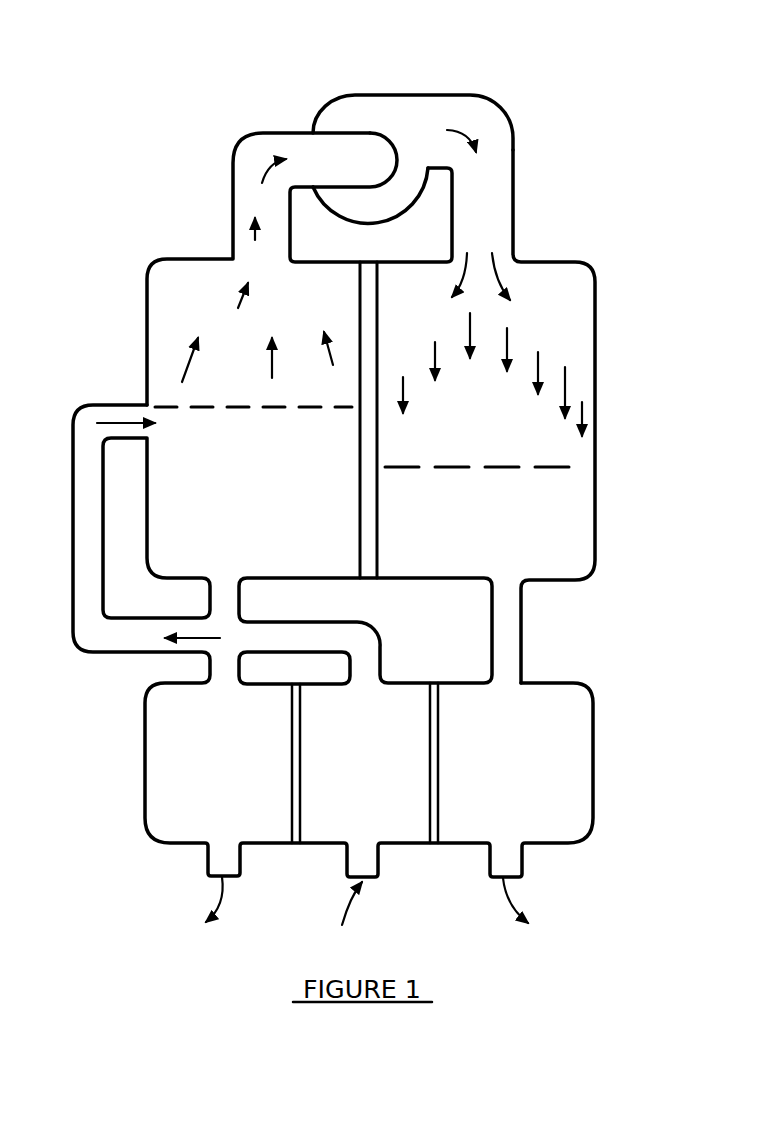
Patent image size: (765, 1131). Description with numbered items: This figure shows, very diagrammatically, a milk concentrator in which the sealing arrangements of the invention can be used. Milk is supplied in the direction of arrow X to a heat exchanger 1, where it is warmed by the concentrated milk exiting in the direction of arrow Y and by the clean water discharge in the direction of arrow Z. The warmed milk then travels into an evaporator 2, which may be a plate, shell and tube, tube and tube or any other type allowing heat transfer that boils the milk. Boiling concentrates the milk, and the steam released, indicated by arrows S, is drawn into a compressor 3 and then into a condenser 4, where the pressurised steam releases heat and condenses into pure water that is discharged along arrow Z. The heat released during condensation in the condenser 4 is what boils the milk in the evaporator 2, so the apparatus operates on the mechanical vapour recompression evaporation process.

The heat exchanger 1 is at (393, 795).
The evaporator 2 is at (148, 340).
The compressor 3 is at (362, 118).
The condenser 4 is at (595, 433).